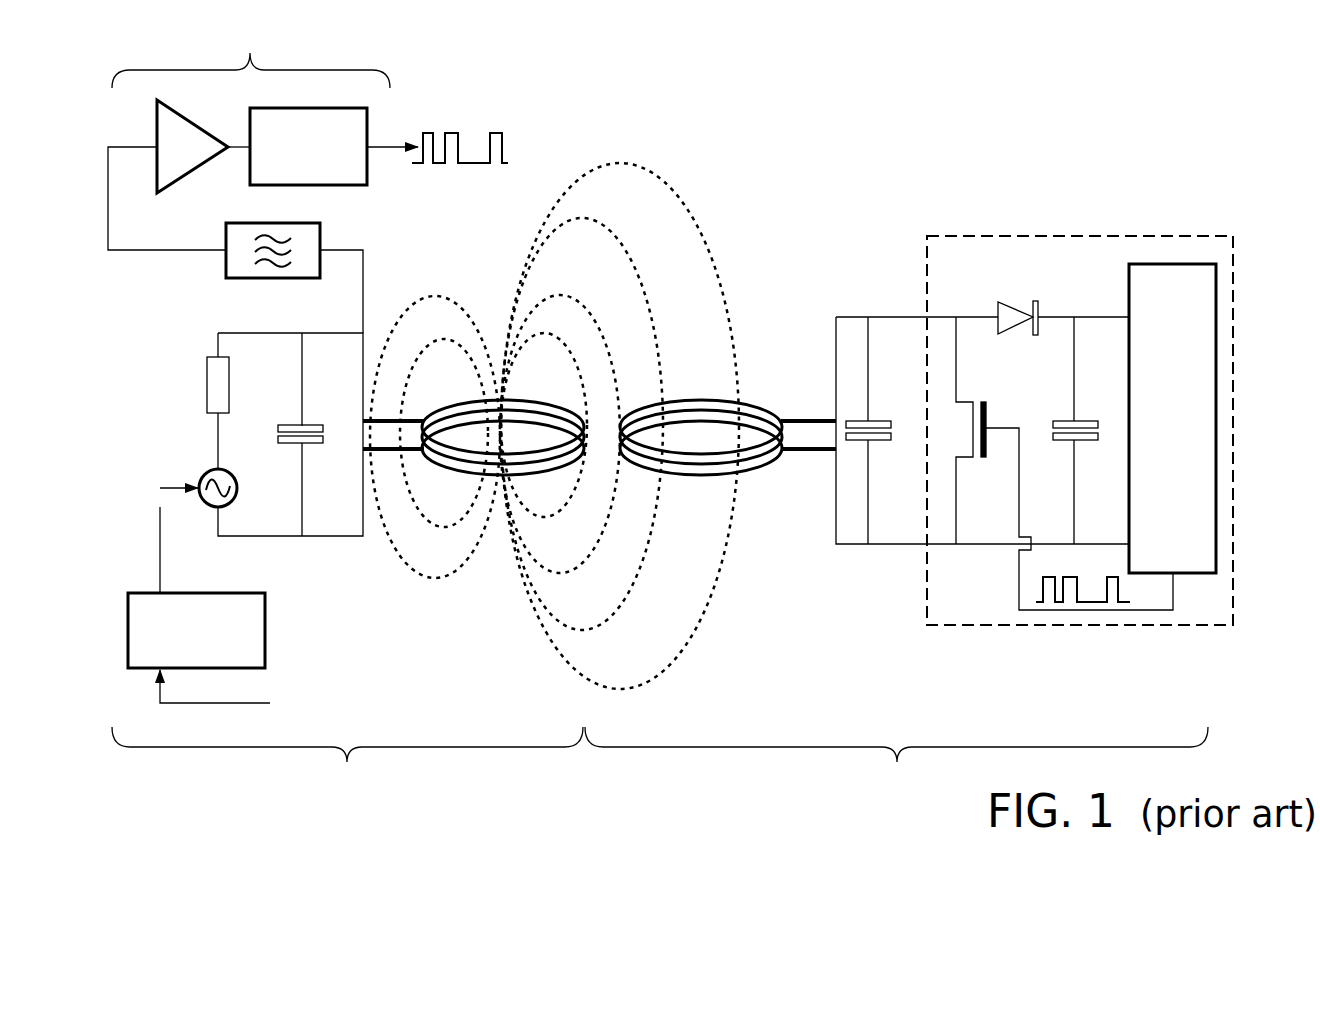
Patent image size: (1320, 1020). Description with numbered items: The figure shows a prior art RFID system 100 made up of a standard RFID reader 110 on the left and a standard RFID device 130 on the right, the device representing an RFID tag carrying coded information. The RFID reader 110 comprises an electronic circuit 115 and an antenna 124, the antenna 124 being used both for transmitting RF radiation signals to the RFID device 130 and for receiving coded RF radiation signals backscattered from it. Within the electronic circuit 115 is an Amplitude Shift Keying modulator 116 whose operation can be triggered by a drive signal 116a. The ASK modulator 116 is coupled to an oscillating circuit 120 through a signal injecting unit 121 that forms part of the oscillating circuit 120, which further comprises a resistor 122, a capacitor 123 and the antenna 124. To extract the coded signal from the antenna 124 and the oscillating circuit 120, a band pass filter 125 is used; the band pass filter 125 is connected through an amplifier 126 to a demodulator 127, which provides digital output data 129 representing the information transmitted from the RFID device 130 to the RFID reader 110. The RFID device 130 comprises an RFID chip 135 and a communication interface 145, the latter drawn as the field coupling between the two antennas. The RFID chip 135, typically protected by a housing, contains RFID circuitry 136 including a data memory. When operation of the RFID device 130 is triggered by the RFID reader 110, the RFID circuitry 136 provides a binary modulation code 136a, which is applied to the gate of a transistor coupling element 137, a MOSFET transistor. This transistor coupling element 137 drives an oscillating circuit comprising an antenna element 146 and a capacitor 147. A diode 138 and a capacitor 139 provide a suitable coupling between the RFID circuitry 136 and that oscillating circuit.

The RFID system 100 is at (1114, 94).
The RFID reader 110 is at (347, 760).
The electronic circuit 115 is at (251, 56).
The Amplitude Shift Keying (ASK) modulator 116 is at (196, 630).
The drive signal 116a is at (243, 703).
The oscillating circuit 120 is at (248, 494).
The signal injecting unit 121 is at (199, 484).
The resistor 122 is at (207, 381).
The capacitor 123 is at (316, 424).
The antenna 124 is at (456, 478).
The band pass filter 125 is at (226, 260).
The amplifier 126 is at (192, 146).
The demodulator 127 is at (308, 146).
The digital output data 129 is at (462, 124).
The RFID device 130 is at (896, 761).
The RFID chip 135 is at (1011, 233).
The RFID circuitry 136 is at (1172, 418).
The binary modulation code 136a is at (1034, 590).
The transistor coupling element 137 is at (985, 398).
The diode 138 is at (1016, 300).
The capacitor 139 is at (1087, 419).
The communication interface 145 is at (795, 264).
The antenna element 146 is at (758, 476).
The capacitor 147 is at (882, 419).